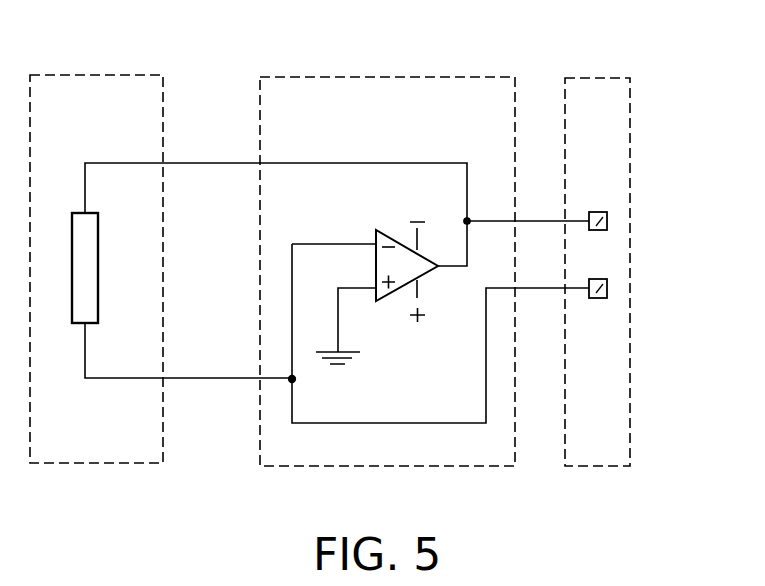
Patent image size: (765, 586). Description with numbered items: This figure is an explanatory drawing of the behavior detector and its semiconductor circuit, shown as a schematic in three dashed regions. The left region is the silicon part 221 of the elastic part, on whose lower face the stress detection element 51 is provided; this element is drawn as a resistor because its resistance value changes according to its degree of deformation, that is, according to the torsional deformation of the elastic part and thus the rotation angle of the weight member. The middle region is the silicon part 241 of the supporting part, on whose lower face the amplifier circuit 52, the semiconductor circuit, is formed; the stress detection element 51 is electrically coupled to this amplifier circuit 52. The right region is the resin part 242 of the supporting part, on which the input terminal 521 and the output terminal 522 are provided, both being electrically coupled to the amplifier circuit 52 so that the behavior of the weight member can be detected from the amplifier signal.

The silicon part 221 is at (70, 73).
The silicon part 241 is at (360, 76).
The resin part 242 is at (587, 77).
The stress detection element 51 is at (72, 248).
The amplifier circuit 52 is at (393, 333).
The input terminal 521 is at (604, 282).
The output terminal 522 is at (604, 215).